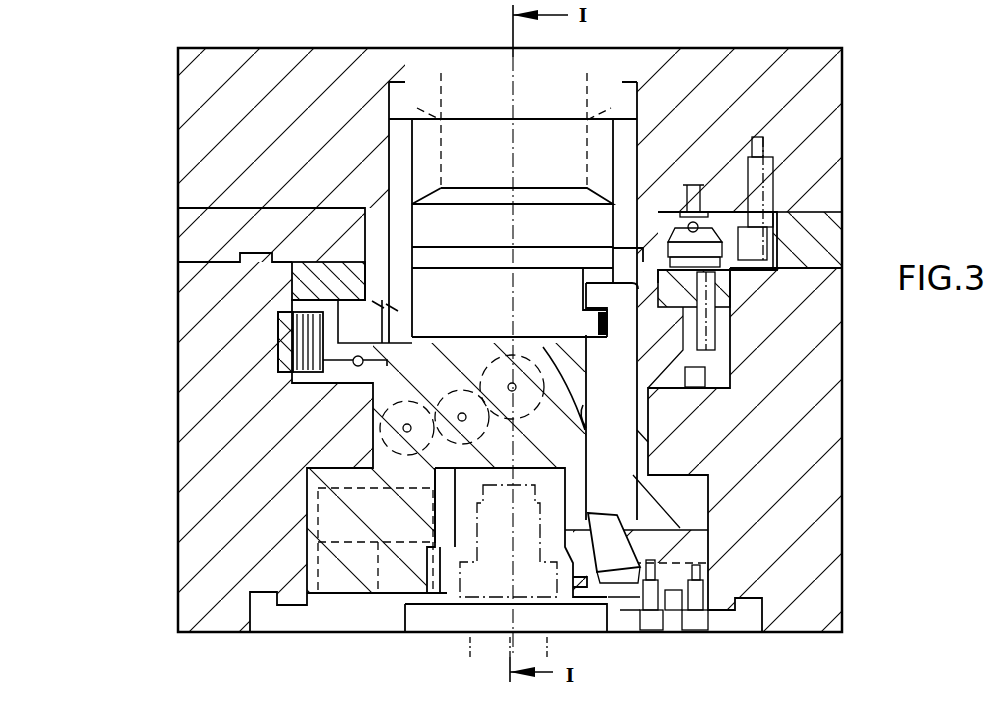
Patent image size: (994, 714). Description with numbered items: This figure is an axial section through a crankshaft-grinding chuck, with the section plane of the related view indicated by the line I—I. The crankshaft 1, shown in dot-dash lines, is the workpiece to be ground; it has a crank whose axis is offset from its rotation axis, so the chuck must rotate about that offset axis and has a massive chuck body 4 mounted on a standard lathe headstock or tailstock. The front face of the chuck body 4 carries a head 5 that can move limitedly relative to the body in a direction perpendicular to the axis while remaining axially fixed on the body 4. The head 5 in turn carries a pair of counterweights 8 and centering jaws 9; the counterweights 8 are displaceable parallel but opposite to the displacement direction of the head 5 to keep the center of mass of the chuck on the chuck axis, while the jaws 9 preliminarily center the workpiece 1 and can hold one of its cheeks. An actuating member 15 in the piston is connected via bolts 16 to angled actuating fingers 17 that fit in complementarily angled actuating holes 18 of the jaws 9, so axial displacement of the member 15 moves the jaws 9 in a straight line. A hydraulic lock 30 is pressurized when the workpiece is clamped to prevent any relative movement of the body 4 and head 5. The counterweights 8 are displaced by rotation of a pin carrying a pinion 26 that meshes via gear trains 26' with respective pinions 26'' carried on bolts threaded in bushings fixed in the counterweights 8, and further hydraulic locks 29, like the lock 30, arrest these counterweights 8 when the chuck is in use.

The crankshaft 1 is at (590, 637).
The chuck body 4 is at (823, 135).
The head 5 is at (379, 398).
The counterweights 8 is at (193, 418).
The centering jaws 9 is at (625, 623).
The actuating member 15 is at (534, 309).
The bolts 16 is at (599, 412).
The angled actuating fingers 17 is at (605, 528).
The angled actuating holes 18 is at (660, 632).
The pinion 26 is at (509, 351).
The gear trains 26' is at (453, 363).
The pinions 26'' is at (264, 438).
The hydraulic locks 29 is at (272, 334).
The hydraulic lock 30 is at (706, 242).